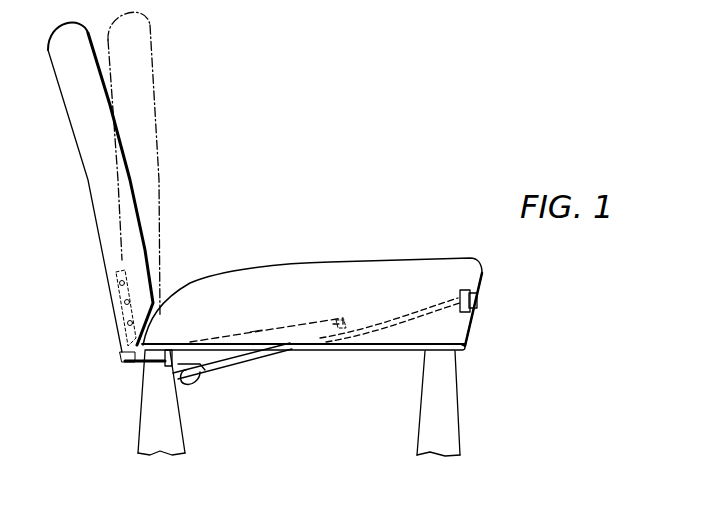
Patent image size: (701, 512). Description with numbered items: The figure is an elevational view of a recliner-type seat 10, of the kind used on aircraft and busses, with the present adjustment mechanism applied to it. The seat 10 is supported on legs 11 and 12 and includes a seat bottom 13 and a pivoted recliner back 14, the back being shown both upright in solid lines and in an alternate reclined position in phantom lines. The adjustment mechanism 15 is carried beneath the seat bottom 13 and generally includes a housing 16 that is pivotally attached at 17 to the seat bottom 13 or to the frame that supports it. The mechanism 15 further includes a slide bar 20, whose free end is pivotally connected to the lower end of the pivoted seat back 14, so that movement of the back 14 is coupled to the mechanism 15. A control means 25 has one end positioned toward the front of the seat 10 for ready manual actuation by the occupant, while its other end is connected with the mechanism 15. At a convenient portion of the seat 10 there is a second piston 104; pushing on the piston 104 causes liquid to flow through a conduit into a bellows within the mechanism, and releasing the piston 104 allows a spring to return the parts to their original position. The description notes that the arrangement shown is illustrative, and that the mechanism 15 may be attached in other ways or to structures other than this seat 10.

The recliner-type seat 10 is at (297, 219).
The leg 11 is at (172, 438).
The leg 12 is at (437, 413).
The seat bottom 13 is at (350, 270).
The pivoted recliner back 14 is at (110, 195).
The adjustment mechanism 15 is at (258, 316).
The housing 16 is at (276, 334).
The pivotal attachment 17 is at (357, 337).
The slide bar 20 is at (160, 365).
The control means 25 is at (242, 372).
The second piston 104 is at (478, 302).